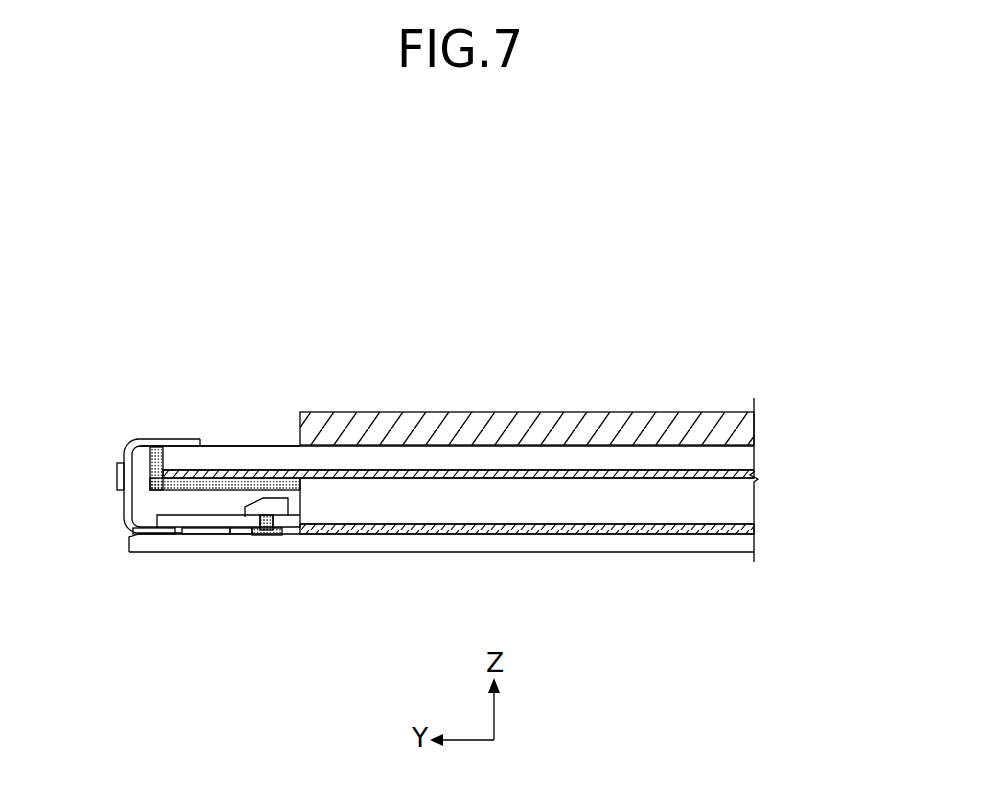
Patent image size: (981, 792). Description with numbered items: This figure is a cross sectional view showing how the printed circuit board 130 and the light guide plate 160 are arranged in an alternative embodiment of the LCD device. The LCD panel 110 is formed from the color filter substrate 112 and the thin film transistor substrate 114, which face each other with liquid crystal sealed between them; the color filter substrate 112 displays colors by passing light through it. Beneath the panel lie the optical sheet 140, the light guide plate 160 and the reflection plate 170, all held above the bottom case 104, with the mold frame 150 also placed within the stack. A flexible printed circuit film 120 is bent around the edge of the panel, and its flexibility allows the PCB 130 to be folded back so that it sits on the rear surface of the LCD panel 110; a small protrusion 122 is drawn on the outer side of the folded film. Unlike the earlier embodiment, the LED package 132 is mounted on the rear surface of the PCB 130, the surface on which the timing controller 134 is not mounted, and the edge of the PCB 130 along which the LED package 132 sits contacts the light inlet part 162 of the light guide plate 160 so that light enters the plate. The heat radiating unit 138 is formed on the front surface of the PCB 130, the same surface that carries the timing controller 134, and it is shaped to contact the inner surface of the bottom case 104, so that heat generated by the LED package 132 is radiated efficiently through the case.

The bottom case 104 is at (472, 543).
The LCD panel 110 is at (534, 430).
The color filter substrate 112 is at (755, 428).
The thin film transistor substrate 114 is at (755, 455).
The flexible printed circuit film 120 is at (160, 440).
The protrusion 122 is at (118, 477).
The printed circuit board 130 is at (261, 487).
The LED package 132 is at (275, 511).
The timing controller 134 is at (204, 530).
The heat radiating unit 138 is at (268, 530).
The optical sheet 140 is at (755, 473).
The mold frame 150 is at (155, 492).
The light guide plate 160 is at (755, 503).
The light inlet part 162 is at (308, 511).
The reflection plate 170 is at (755, 530).